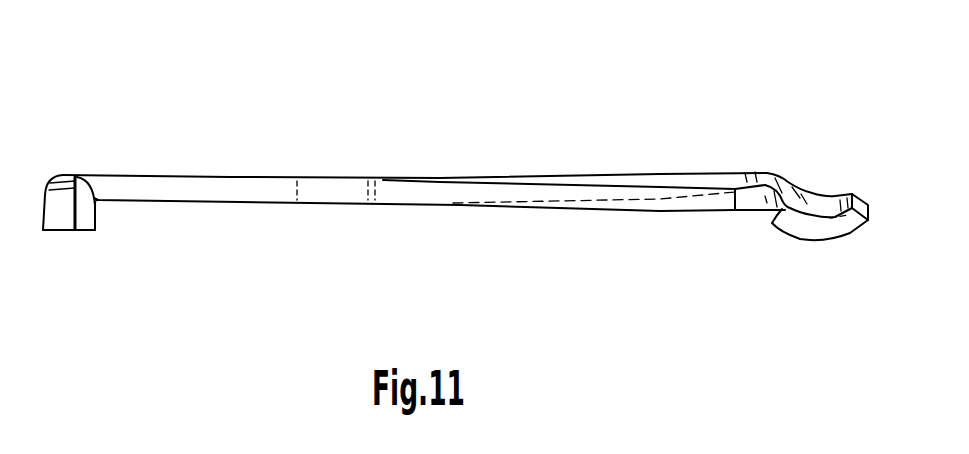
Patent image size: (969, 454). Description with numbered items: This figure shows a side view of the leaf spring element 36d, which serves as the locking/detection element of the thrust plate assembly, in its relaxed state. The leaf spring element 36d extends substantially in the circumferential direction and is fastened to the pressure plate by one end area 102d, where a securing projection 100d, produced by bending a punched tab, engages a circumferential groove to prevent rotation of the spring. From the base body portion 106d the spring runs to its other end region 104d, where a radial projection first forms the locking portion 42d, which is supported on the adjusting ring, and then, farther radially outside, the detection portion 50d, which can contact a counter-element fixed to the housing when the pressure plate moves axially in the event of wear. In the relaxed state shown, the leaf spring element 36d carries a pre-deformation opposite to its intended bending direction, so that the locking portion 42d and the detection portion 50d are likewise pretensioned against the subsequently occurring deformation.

The leaf spring element 36d is at (392, 178).
The locking portion 42d is at (802, 182).
The detection portion 50d is at (860, 187).
The securing projection 100d is at (38, 230).
The end area 102d is at (100, 128).
The end region 104d is at (750, 248).
The base body portion 106d is at (328, 198).